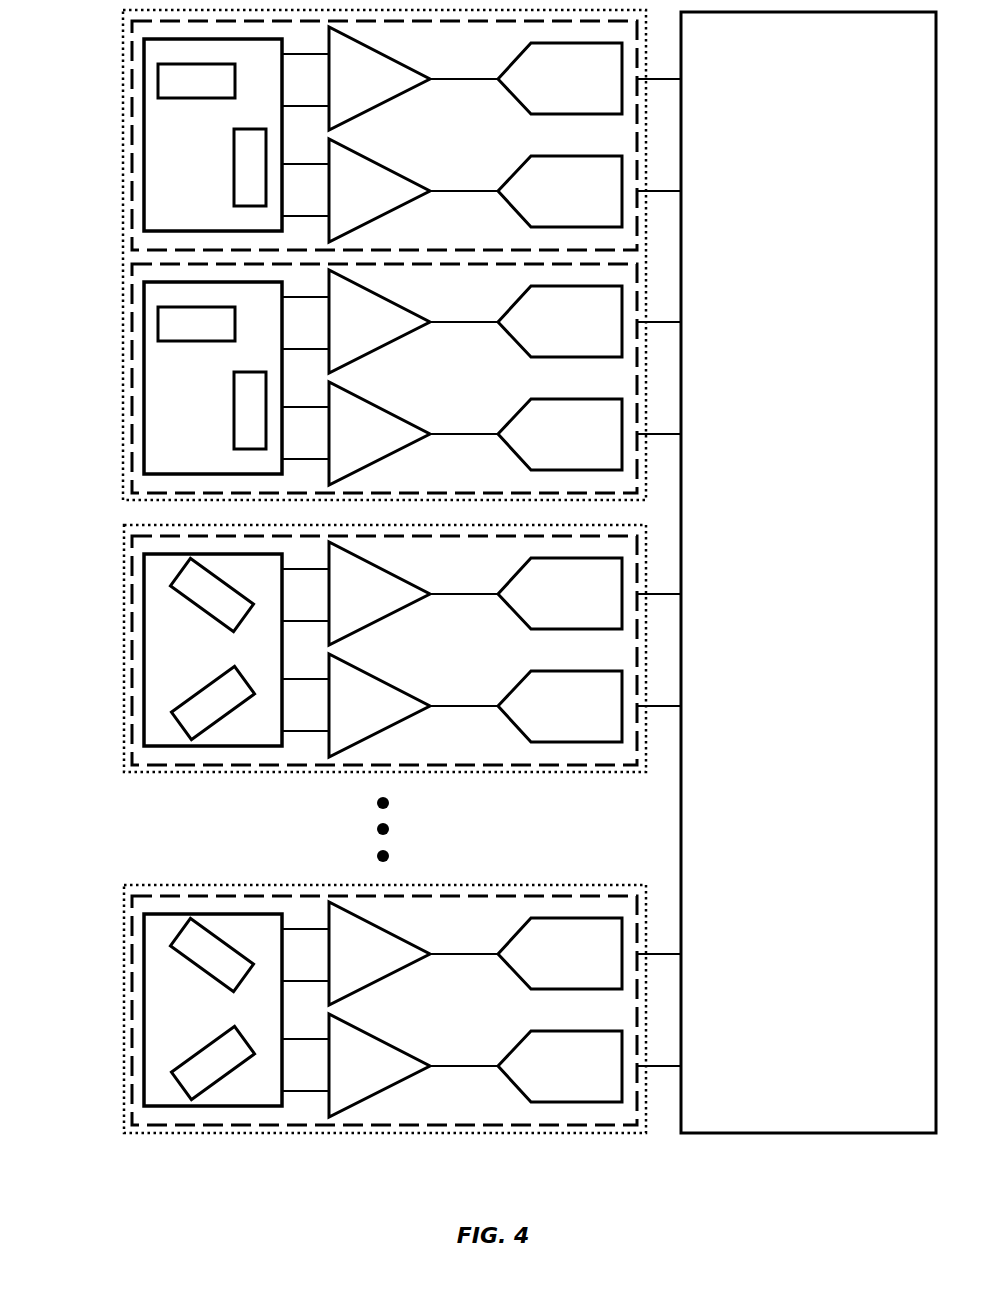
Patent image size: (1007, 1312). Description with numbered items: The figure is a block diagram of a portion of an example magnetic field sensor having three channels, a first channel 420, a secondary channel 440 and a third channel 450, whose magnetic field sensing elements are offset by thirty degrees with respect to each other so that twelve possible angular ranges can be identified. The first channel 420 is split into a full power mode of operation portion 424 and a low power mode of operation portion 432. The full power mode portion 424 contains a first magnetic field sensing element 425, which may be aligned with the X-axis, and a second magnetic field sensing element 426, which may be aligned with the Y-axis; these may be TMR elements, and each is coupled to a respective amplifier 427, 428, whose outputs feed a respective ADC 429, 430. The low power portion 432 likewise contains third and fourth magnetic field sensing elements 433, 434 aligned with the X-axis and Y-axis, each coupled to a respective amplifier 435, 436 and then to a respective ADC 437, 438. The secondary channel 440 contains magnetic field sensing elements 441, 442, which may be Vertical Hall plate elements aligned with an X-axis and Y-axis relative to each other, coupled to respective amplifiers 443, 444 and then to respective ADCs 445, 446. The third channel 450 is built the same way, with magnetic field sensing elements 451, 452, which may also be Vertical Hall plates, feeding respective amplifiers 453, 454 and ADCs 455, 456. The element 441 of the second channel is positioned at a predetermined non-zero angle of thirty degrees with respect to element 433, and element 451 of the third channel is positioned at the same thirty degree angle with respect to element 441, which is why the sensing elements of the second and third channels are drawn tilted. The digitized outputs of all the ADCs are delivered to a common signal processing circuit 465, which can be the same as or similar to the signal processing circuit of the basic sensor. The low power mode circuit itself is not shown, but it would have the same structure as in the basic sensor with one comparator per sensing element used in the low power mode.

The first channel 420 is at (123, 33).
The full power mode of operation portion 424 is at (436, 54).
The first magnetic field sensing element 425 is at (220, 99).
The second magnetic field sensing element 426 is at (233, 151).
The amplifier 427 is at (342, 93).
The amplifier 428 is at (342, 205).
The ADC 429 is at (546, 92).
The ADC 430 is at (546, 204).
The low power mode of operation portion 432 is at (406, 378).
The third magnetic field sensing element 433 is at (196, 346).
The fourth magnetic field sensing element 434 is at (224, 410).
The amplifier 435 is at (379, 321).
The amplifier 436 is at (379, 433).
The ADC 437 is at (560, 321).
The ADC 438 is at (560, 434).
The secondary channel 440 is at (365, 648).
The magnetic field sensing element 441 is at (152, 594).
The magnetic field sensing element 442 is at (152, 702).
The amplifier 443 is at (379, 593).
The amplifier 444 is at (379, 705).
The ADC 445 is at (560, 593).
The ADC 446 is at (560, 706).
The third channel 450 is at (365, 1009).
The magnetic field sensing element 451 is at (152, 954).
The magnetic field sensing element 452 is at (152, 1062).
The amplifier 453 is at (379, 953).
The amplifier 454 is at (379, 1065).
The ADC 455 is at (560, 953).
The ADC 456 is at (560, 1066).
The signal processing circuit 465 is at (787, 616).